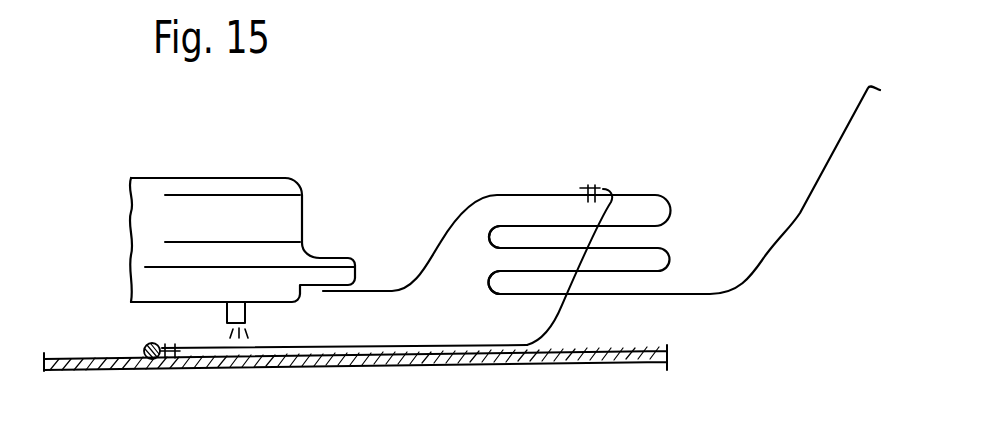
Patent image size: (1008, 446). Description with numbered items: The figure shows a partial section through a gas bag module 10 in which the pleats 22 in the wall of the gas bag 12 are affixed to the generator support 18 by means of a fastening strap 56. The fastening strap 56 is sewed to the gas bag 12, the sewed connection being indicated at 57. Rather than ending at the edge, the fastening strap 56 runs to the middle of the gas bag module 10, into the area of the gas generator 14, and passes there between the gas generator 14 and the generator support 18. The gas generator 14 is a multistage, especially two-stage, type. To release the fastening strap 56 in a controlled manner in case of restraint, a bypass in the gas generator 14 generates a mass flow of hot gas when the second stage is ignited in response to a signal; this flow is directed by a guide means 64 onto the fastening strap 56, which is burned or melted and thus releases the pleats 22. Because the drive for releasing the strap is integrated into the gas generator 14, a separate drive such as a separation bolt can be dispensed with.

The gas bag module 10 is at (435, 133).
The gas bag 12 is at (806, 218).
The gas generator 14 is at (292, 207).
The generator support 18 is at (630, 363).
The pleats 22 is at (676, 248).
The fastening strap 56 is at (413, 337).
The seam 57 is at (593, 181).
The guide means 64 is at (246, 312).